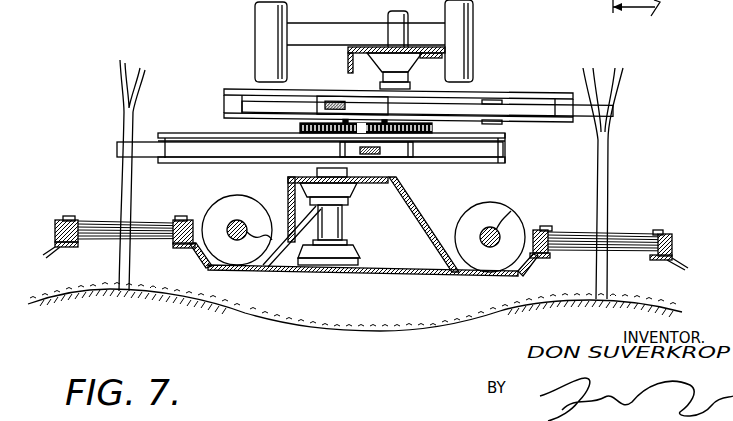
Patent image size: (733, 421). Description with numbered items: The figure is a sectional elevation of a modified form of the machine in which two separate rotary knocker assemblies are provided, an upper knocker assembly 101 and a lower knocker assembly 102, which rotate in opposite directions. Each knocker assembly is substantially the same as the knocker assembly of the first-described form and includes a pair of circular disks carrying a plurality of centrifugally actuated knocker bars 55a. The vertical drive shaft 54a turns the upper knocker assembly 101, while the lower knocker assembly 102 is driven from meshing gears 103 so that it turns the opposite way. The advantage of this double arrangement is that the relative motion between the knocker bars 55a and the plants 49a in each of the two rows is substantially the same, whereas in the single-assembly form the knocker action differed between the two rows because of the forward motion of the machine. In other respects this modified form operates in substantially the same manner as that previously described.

The plants 49a is at (123, 266).
The vertical drive shaft 54a is at (393, 22).
The centrifugally actuated knocker bars 55a is at (224, 103).
The upper knocker assembly 101 is at (522, 88).
The lower knocker assembly 102 is at (506, 177).
The meshing gears 103 is at (357, 134).